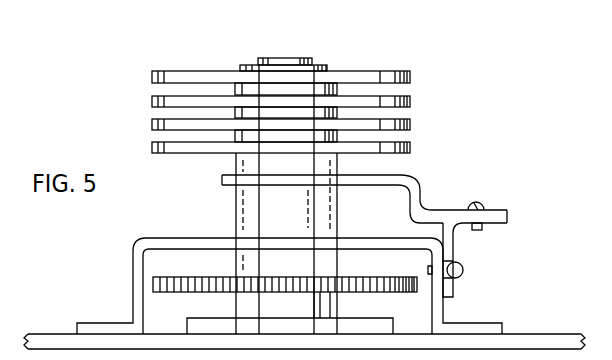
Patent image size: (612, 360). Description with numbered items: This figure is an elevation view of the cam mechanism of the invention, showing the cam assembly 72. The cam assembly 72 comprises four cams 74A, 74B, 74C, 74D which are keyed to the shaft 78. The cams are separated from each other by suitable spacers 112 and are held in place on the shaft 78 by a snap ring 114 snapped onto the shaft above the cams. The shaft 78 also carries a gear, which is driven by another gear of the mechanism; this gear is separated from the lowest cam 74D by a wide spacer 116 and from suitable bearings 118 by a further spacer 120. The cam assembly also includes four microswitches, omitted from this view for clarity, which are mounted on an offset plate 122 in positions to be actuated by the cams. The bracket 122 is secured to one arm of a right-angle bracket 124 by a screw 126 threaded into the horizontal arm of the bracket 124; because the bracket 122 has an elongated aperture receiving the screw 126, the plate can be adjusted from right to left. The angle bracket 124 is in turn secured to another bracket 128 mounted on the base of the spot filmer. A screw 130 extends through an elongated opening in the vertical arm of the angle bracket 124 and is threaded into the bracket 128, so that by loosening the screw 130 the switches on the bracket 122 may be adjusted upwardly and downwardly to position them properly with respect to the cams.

The cam assembly 72 is at (281, 113).
The cam 74A is at (411, 77).
The cam 74B is at (411, 102).
The cam 74C is at (411, 125).
The cam 74D is at (411, 149).
The shaft 78 is at (292, 60).
The spacers 112 is at (236, 112).
The snap ring 114 is at (328, 67).
The wide spacer 116 is at (236, 201).
The bearings 118 is at (388, 323).
The spacer 120 is at (336, 305).
The offset plate 122 is at (420, 189).
The right-angle bracket 124 is at (502, 225).
The screw 126 is at (482, 204).
The bracket 128 is at (490, 324).
The screw 130 is at (463, 270).